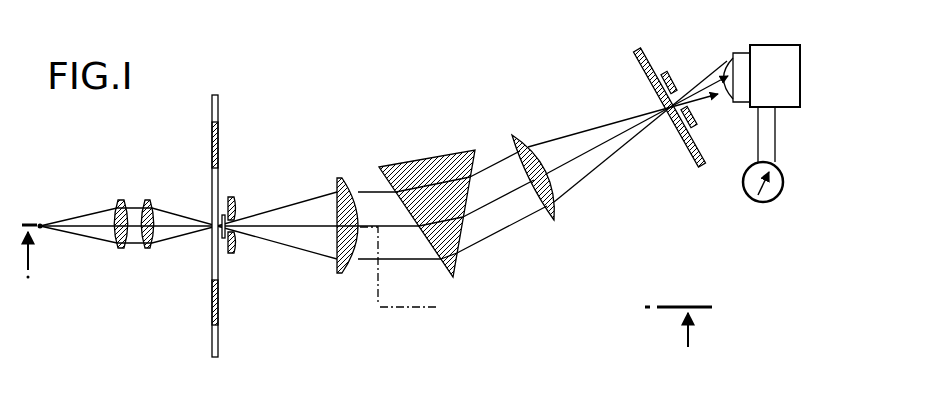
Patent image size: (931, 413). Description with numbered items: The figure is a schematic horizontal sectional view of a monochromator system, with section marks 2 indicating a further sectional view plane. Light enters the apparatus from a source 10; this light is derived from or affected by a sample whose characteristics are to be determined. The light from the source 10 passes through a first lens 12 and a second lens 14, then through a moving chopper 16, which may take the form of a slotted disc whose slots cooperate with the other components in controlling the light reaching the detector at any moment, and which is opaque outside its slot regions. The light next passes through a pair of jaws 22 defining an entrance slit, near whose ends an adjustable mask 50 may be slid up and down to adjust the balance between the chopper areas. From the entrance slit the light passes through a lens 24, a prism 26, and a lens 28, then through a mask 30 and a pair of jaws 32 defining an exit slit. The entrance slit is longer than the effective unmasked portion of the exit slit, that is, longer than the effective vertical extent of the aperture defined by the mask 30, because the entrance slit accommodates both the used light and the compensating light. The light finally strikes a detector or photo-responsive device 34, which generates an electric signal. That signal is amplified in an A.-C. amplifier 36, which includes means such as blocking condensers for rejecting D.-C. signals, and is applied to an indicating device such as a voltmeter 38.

The section line 2- 2 is at (367, 274).
The source 10 is at (46, 221).
The lens 12 is at (118, 200).
The lens 14 is at (150, 200).
The moving chopper 16 is at (213, 134).
The adjustable mask 50 is at (224, 222).
The pair of jaws defining an entrance slit 22 is at (238, 209).
The lens 24 is at (337, 261).
The prism 26 is at (436, 168).
The lens 28 is at (557, 203).
The mask 30 is at (693, 158).
The pair of jaws defining an exit slit 32 is at (670, 77).
The detector or photo-responsive device 34 is at (722, 62).
The A.-C. amplifier 36 is at (788, 104).
The voltmeter 38 is at (752, 190).